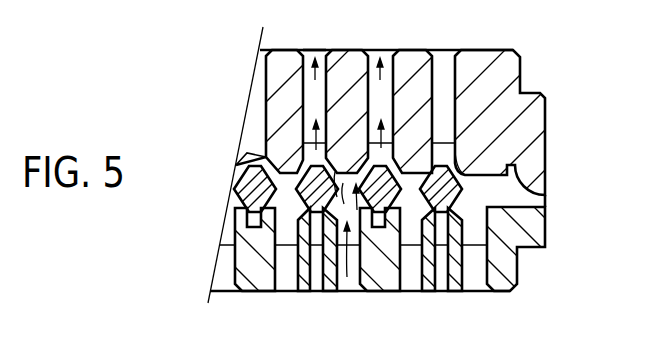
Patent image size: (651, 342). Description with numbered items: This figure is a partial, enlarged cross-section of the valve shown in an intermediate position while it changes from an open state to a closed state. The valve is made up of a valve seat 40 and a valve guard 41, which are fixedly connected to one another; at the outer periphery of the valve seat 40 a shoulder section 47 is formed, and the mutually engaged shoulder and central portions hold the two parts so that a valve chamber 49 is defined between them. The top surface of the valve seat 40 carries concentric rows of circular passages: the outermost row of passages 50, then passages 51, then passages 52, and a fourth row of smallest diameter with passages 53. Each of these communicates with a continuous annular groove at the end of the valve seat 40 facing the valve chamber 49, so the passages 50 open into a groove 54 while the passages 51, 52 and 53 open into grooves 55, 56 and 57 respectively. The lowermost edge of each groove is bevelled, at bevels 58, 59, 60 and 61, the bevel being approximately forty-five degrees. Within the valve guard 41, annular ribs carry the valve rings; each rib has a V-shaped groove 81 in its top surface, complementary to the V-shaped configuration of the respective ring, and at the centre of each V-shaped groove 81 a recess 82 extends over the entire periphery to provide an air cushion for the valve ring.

The valve seat 40 is at (503, 77).
The valve guard 41 is at (530, 221).
The shoulder section 47 is at (490, 188).
The valve chamber 49 is at (490, 200).
The passages 50 is at (443, 156).
The passages 51 is at (388, 170).
The passages 52 is at (310, 63).
The passages 53 is at (265, 78).
The groove 54 is at (456, 157).
The groove 55 is at (388, 64).
The groove 56 is at (333, 170).
The groove 57 is at (265, 143).
The bevel 58 is at (458, 155).
The bevel 59 is at (408, 170).
The bevel 60 is at (263, 157).
The bevel 61 is at (238, 157).
The V-shaped groove 81 is at (233, 199).
The recess 82 is at (252, 221).